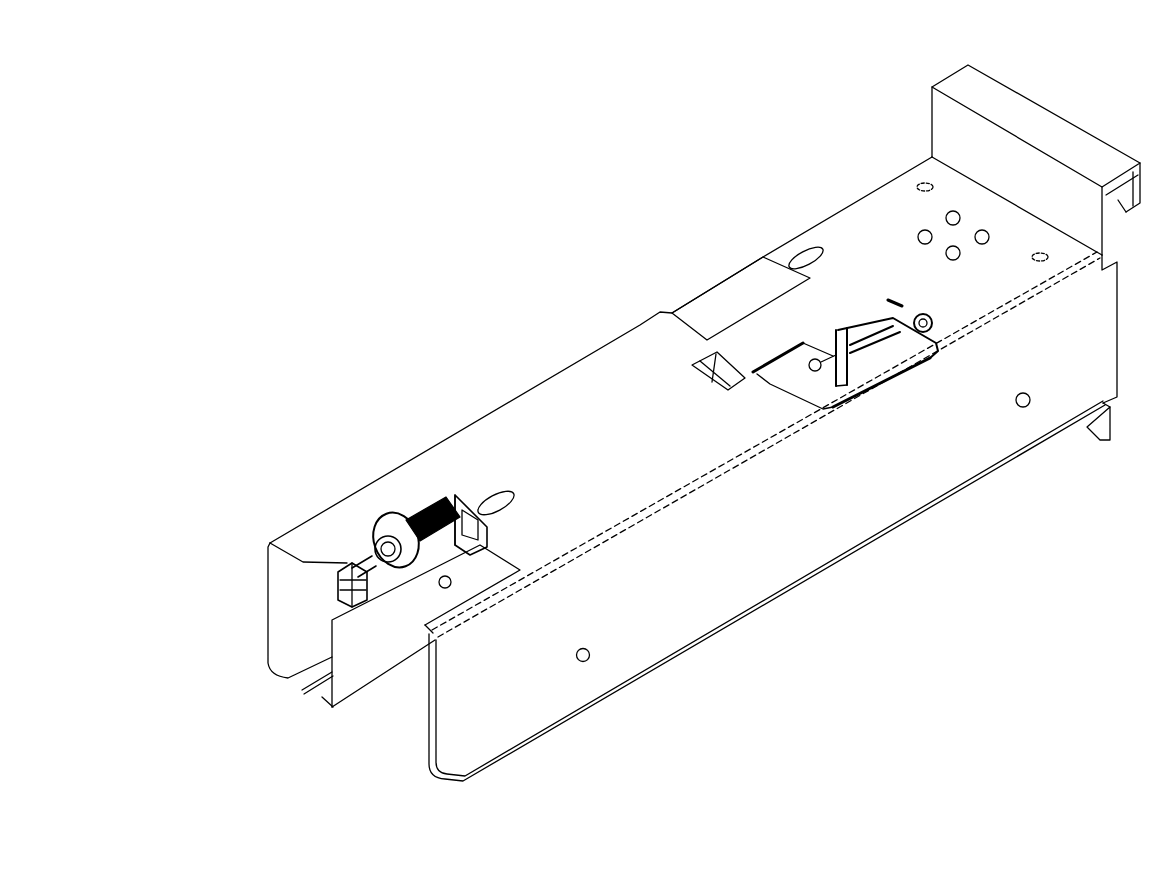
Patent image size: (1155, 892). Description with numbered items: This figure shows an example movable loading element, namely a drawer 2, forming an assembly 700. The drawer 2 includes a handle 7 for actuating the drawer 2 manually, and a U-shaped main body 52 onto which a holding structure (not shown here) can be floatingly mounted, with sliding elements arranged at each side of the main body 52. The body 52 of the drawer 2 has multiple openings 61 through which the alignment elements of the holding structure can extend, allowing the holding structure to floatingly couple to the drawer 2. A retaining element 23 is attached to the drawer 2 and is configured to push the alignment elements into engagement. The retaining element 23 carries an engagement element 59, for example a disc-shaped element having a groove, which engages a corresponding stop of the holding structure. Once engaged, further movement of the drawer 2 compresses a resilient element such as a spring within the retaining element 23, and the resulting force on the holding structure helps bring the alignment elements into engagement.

The cable tray assembly 700 is at (770, 128).
The handle 7 is at (1032, 117).
The openings 61 is at (758, 282).
The U-shaped main body 52 is at (552, 417).
The engagement element 59 is at (385, 513).
The retaining element 23 is at (415, 500).
The drawer 2 is at (730, 553).